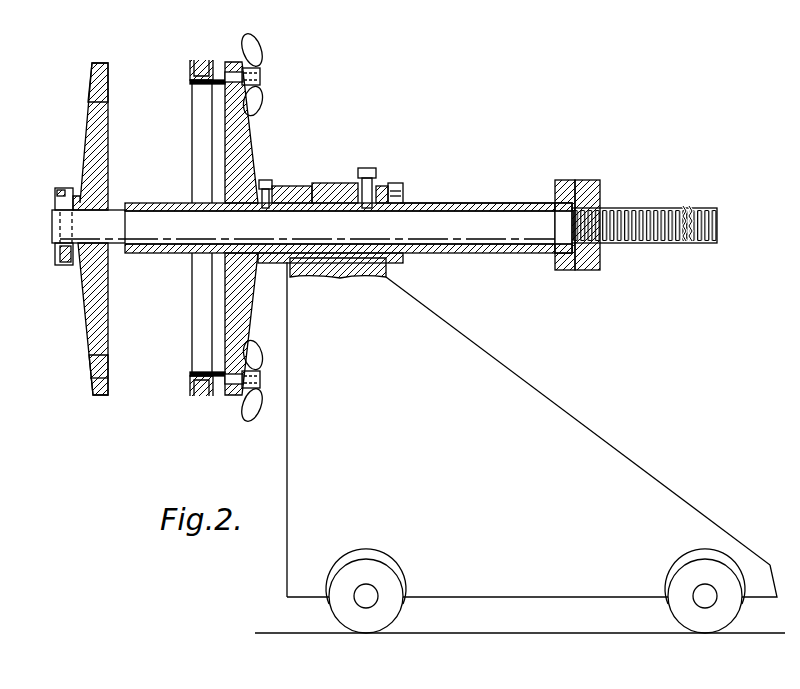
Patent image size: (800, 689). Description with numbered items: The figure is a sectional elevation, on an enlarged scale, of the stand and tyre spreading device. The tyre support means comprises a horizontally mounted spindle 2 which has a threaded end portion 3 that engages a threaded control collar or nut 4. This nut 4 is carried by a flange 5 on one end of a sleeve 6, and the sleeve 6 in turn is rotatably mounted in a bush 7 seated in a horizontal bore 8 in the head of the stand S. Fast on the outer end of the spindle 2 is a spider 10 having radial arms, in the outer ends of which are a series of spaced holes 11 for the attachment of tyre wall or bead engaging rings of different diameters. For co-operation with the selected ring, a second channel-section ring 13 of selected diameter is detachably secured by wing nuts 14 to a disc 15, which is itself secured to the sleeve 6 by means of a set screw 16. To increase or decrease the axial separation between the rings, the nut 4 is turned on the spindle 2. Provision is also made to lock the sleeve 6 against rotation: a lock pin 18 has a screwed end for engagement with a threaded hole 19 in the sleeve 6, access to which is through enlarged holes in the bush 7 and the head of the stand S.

The spindle 2 is at (500, 236).
The threaded end portion 3 is at (660, 208).
The threaded control collar or nut 4 is at (598, 186).
The flange 5 is at (567, 190).
The sleeve 6 is at (500, 193).
The bush 7 is at (332, 184).
The horizontal bore 8 is at (298, 186).
The spider 10 is at (94, 155).
The spaced holes 11 is at (96, 104).
The channel-section ring 13 is at (216, 48).
The wing nuts 14 is at (262, 80).
The disc 15 is at (255, 175).
The set screw 16 is at (268, 184).
The lock pin 18 is at (383, 160).
The threaded hole 19 is at (396, 186).
The stand S is at (480, 478).